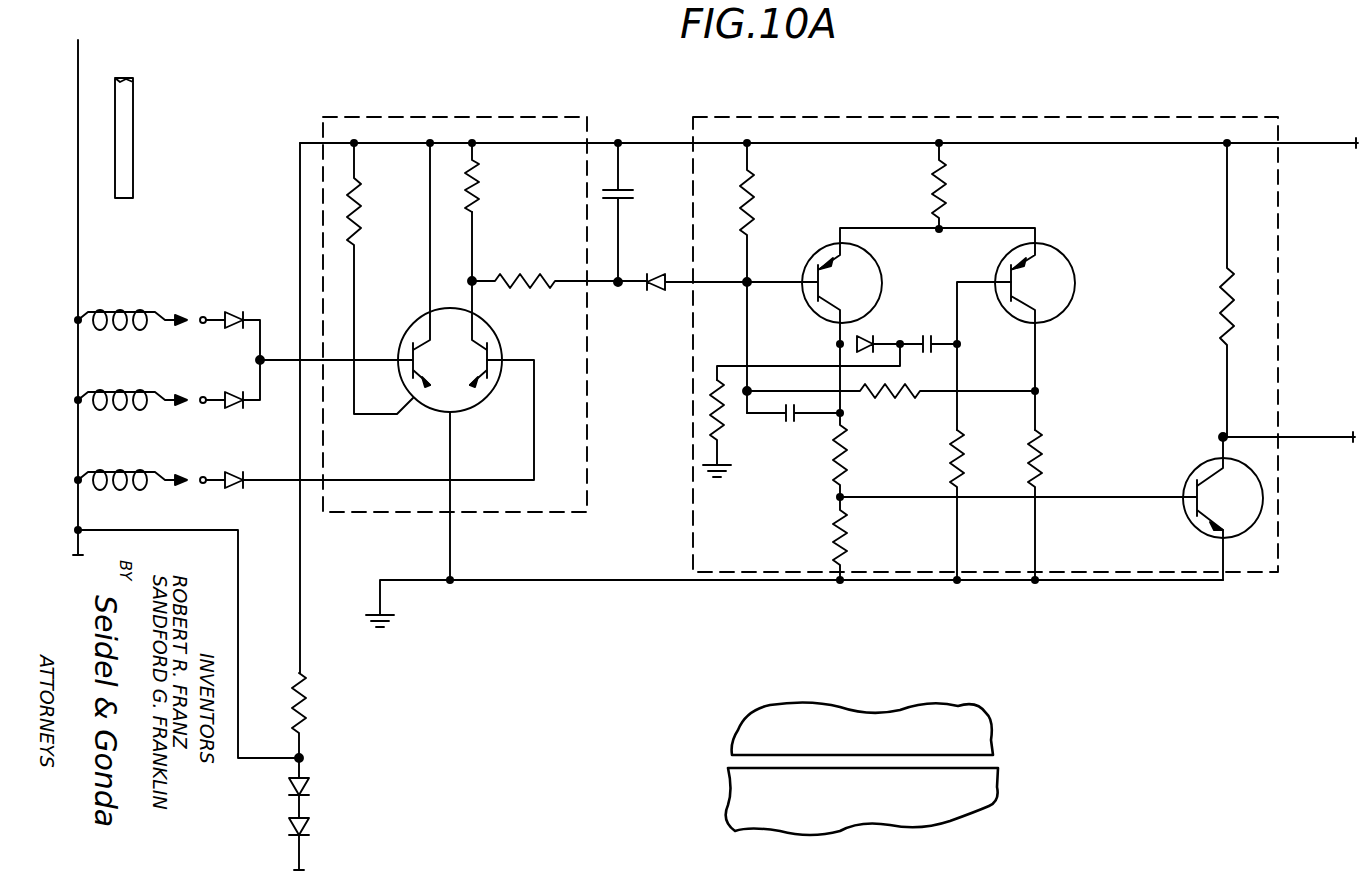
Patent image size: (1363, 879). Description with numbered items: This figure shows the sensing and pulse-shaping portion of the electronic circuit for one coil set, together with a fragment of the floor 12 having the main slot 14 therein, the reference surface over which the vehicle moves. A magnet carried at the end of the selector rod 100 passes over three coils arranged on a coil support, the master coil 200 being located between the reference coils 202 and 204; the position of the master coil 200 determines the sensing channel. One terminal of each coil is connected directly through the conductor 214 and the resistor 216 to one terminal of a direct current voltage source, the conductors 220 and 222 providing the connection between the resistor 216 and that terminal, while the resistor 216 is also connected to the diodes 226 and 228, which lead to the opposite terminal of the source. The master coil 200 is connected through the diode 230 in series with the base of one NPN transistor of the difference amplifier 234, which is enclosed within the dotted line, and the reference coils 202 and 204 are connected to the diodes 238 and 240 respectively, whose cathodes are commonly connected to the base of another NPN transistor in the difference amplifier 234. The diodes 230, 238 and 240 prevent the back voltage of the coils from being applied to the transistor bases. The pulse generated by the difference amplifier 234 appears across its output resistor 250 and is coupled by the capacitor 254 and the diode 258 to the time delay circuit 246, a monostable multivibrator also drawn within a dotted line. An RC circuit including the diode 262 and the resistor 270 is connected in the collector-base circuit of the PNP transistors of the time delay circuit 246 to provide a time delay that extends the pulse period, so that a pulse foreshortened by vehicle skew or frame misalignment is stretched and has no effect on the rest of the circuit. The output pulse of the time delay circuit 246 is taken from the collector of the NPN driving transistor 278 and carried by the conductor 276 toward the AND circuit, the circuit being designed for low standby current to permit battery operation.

The rod 100 is at (128, 150).
The reference coil 204 is at (123, 318).
The diode 240 is at (237, 318).
The reference coil 202 is at (148, 395).
The diode 238 is at (243, 375).
The master coil 200 is at (160, 455).
The diode 230 is at (235, 477).
The conductor 214 is at (258, 515).
The conductor 220 is at (300, 560).
The resistor 216 is at (300, 705).
The diode 226 is at (306, 783).
The diode 228 is at (309, 826).
The difference amplifier 234 is at (453, 316).
The output resistor 250 is at (472, 178).
The capacitor 254 is at (660, 165).
The diode 258 is at (655, 292).
The time delay circuit 246 is at (986, 324).
The diode 262 is at (870, 335).
The resistor 270 is at (705, 455).
The conductor 222 is at (1150, 148).
The driving transistor 278 is at (1192, 472).
The conductor 276 is at (1330, 440).
The main slot 14 is at (866, 762).
The floor 12 is at (970, 795).